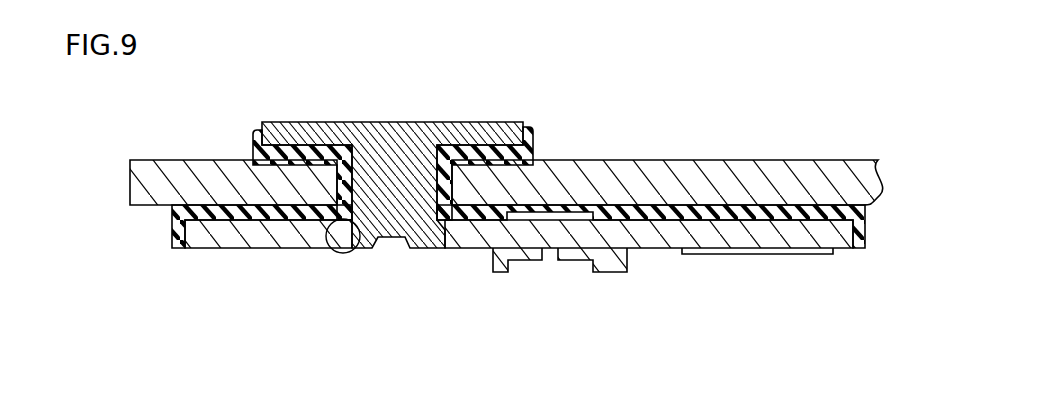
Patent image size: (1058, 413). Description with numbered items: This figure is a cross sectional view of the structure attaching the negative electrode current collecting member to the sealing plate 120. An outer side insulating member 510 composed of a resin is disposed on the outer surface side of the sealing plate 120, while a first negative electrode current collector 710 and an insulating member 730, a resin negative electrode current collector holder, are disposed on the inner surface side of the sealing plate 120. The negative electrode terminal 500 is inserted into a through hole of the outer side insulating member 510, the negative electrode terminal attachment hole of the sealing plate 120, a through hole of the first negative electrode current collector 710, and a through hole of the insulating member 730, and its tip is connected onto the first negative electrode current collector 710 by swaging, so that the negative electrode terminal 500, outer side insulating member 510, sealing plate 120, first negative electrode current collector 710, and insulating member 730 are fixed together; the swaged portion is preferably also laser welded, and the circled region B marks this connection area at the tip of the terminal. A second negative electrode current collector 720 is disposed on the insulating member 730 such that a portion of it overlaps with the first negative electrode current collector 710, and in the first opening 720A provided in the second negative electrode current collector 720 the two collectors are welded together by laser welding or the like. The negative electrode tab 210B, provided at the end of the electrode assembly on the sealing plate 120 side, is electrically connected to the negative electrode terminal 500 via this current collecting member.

The sealing plate 120 is at (173, 158).
The outer side insulating member 510 is at (252, 147).
The negative electrode terminal 500 is at (343, 130).
The insulating member 730 is at (660, 205).
The first negative electrode current collector 710 is at (252, 247).
The second negative electrode current collector 720 is at (657, 238).
The first opening 720A is at (558, 254).
The negative electrode tab 210B is at (755, 254).
The region B is at (343, 252).